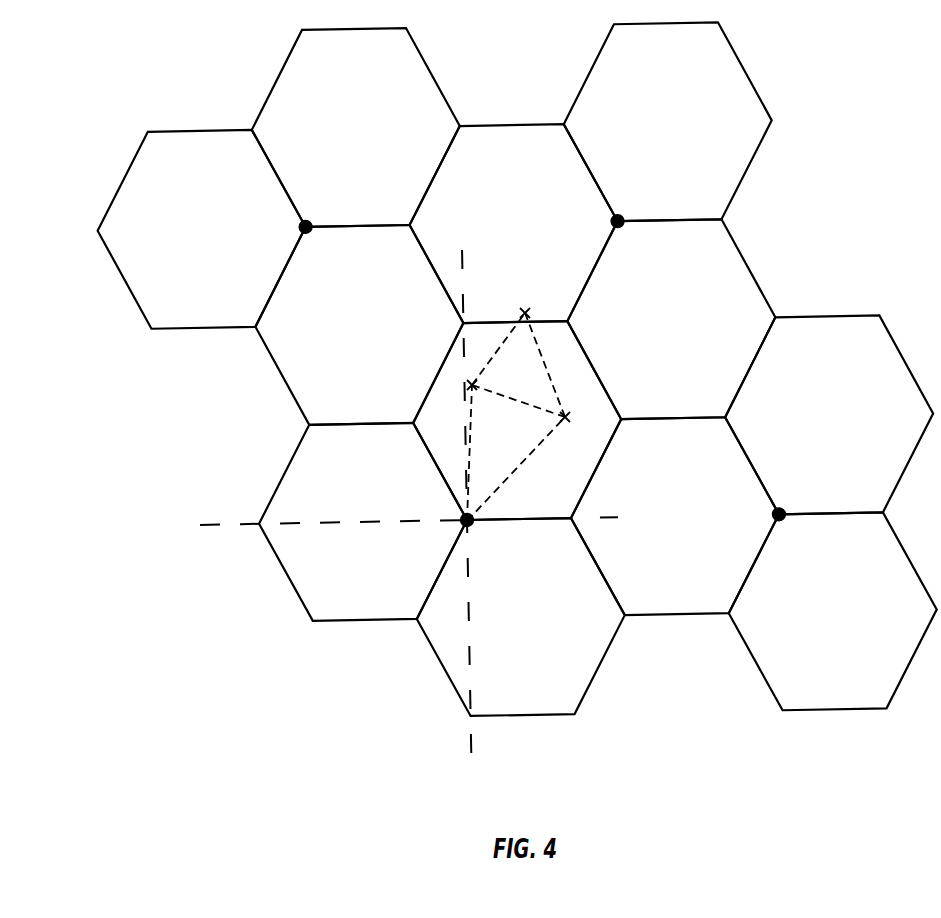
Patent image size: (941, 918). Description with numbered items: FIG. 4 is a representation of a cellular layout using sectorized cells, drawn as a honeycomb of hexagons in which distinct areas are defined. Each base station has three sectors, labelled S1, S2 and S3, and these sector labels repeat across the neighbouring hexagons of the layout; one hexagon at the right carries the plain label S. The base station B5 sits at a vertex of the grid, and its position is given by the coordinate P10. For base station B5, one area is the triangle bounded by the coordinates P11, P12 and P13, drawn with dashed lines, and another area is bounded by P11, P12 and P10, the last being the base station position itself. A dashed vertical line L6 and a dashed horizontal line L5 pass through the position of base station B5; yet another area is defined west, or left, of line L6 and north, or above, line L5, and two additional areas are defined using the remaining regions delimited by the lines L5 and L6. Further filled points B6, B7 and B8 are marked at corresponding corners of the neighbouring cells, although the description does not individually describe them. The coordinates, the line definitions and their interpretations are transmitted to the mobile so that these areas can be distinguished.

The hexagonal cell S is at (829, 414).
The sector S1 is at (596, 467).
The sector S2 is at (438, 372).
The sector S3 is at (514, 272).
The base station B5 is at (480, 537).
The cell boundary point B6 is at (788, 532).
The cell boundary point B7 is at (628, 239).
The cell boundary point B8 is at (319, 243).
The coordinate P10 is at (496, 454).
The coordinate P11 is at (516, 365).
The coordinate P12 is at (568, 376).
The coordinate P13 is at (548, 303).
The line L5 is at (409, 510).
The line L6 is at (480, 513).